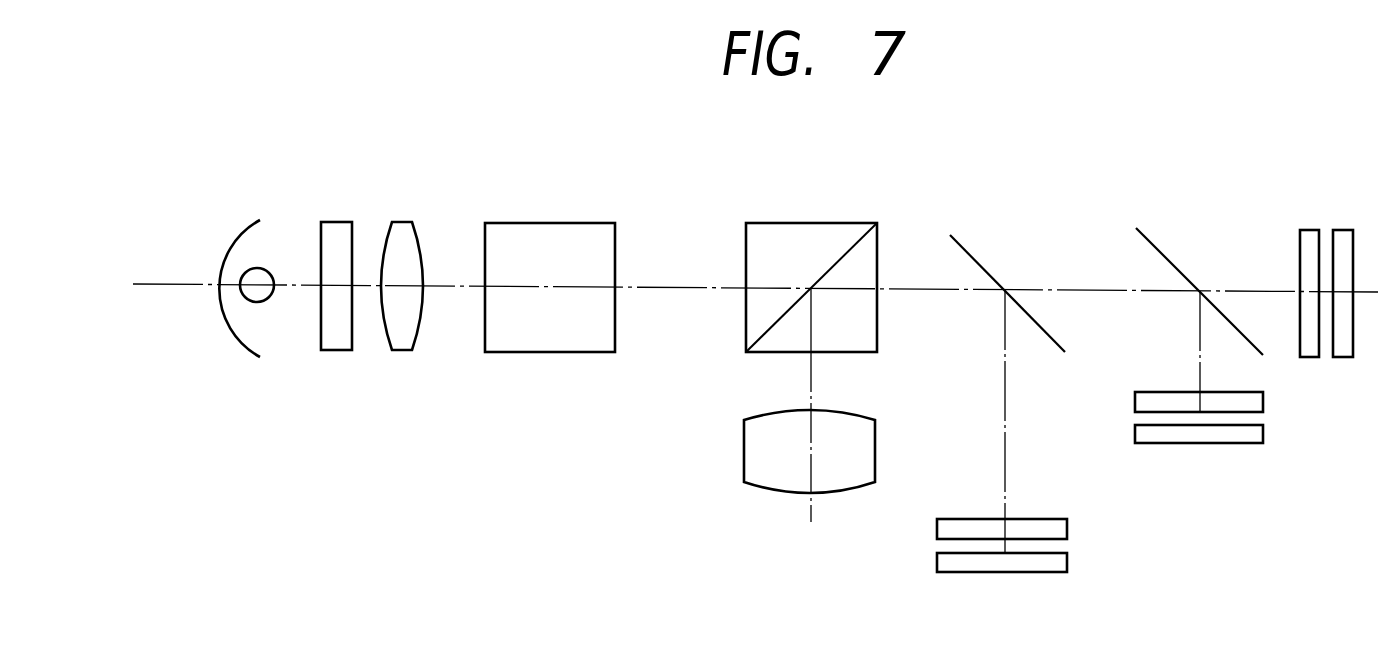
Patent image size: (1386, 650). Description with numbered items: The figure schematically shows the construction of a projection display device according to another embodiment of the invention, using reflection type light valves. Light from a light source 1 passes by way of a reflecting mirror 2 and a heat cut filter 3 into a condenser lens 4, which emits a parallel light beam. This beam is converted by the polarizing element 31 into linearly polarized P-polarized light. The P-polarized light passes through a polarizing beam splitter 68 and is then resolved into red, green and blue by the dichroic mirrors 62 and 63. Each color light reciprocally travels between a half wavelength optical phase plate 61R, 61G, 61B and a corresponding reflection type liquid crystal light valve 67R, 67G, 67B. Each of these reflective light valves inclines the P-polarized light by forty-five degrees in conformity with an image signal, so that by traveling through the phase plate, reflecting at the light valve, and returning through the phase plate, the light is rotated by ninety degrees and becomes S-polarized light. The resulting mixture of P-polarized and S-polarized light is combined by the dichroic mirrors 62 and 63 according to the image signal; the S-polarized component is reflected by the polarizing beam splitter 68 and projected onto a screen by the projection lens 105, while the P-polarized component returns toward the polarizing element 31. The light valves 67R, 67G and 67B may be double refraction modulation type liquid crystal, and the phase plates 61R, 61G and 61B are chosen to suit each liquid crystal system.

The light source 1 is at (268, 269).
The reflecting mirror 2 is at (237, 238).
The heat cut filter 3 is at (345, 222).
The condenser lens 4 is at (407, 222).
The polarizing element 31 is at (597, 223).
The polarizing beam splitter 68 is at (872, 223).
The projection lens 105 is at (878, 436).
The dichroic mirror 62 is at (978, 260).
The dichroic mirror 63 is at (1163, 250).
The half wavelength optical phase plate 61R is at (1298, 240).
The reflection type liquid crystal light valve 67R is at (1345, 230).
The half wavelength optical phase plate 61G is at (1265, 403).
The reflection type liquid crystal light valve 67G is at (1265, 437).
The half wavelength optical phase plate 61B is at (1069, 527).
The reflection type liquid crystal light valve 67B is at (1069, 563).